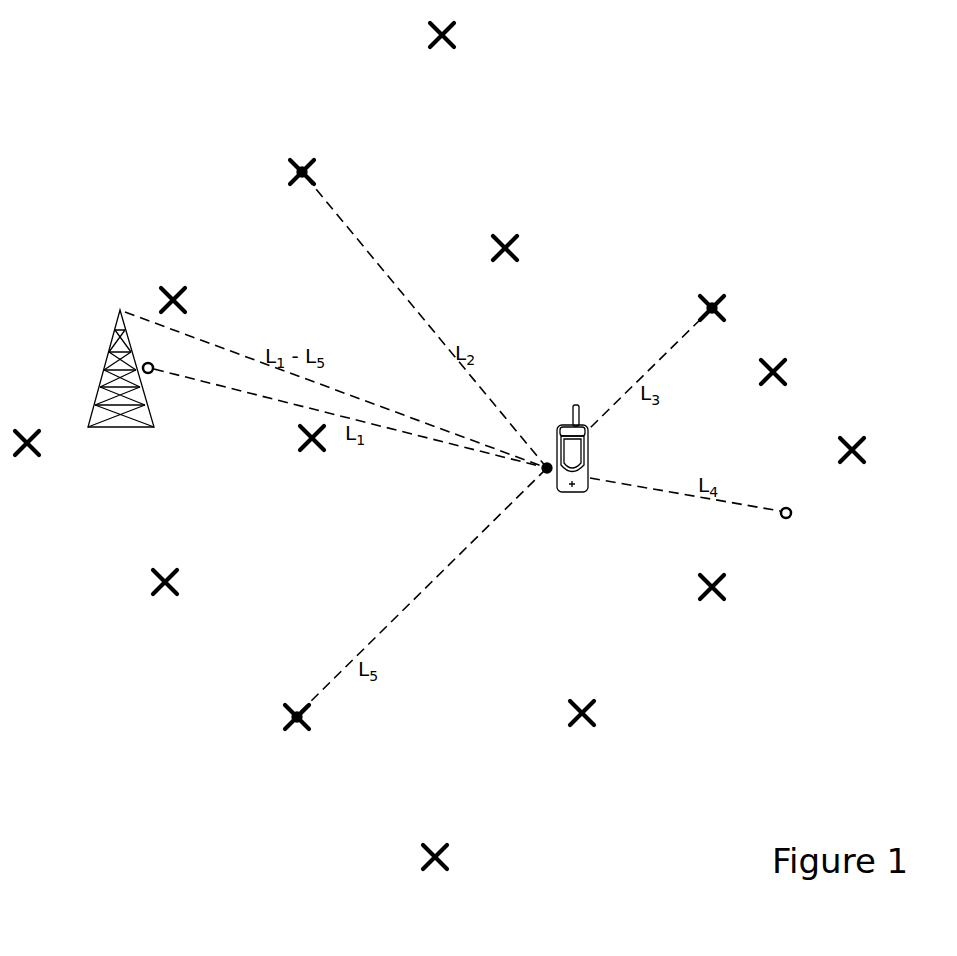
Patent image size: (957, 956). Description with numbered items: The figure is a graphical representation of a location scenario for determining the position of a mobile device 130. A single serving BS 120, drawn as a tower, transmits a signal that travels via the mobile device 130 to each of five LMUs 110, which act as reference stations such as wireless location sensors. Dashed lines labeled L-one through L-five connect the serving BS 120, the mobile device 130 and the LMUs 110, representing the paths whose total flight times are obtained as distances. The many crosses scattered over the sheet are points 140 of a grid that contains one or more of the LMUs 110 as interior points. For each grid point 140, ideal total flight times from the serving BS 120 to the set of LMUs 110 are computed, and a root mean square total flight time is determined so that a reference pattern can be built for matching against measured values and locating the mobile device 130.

The LMU 110 is at (293, 162).
The serving BS 120 is at (100, 352).
The mobile device 130 is at (575, 494).
The point 140 is at (455, 27).